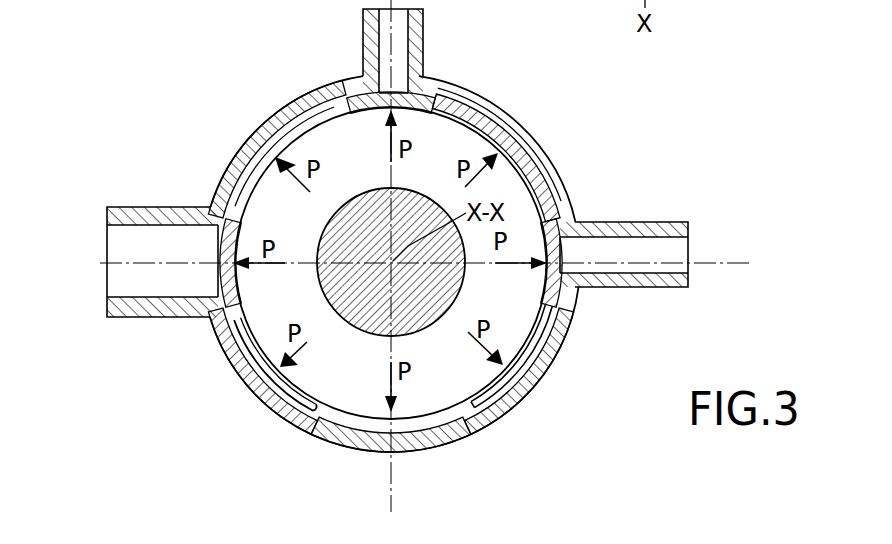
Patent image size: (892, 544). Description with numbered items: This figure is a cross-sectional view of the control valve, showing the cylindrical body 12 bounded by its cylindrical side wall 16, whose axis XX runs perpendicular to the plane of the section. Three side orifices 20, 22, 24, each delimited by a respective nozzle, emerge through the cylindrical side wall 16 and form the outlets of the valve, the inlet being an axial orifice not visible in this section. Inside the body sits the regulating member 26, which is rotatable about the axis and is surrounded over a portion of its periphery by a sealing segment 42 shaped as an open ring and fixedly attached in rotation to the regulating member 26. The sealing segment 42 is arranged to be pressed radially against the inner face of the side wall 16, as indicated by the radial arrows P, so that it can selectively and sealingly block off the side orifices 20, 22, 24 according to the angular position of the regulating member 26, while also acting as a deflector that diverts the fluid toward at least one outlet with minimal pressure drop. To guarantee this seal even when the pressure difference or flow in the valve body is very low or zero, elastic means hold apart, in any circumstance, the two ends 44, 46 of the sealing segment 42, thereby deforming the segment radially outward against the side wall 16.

The cylindrical body 12 is at (400, 249).
The cylindrical side wall 16 is at (530, 140).
The side orifice 20 is at (162, 206).
The side orifice 22 is at (425, 38).
The side orifice 24 is at (645, 222).
The regulating member 26 is at (366, 345).
The sealing segment 42 is at (240, 345).
The end of the sealing segment 44 is at (308, 428).
The end of the sealing segment 46 is at (463, 418).